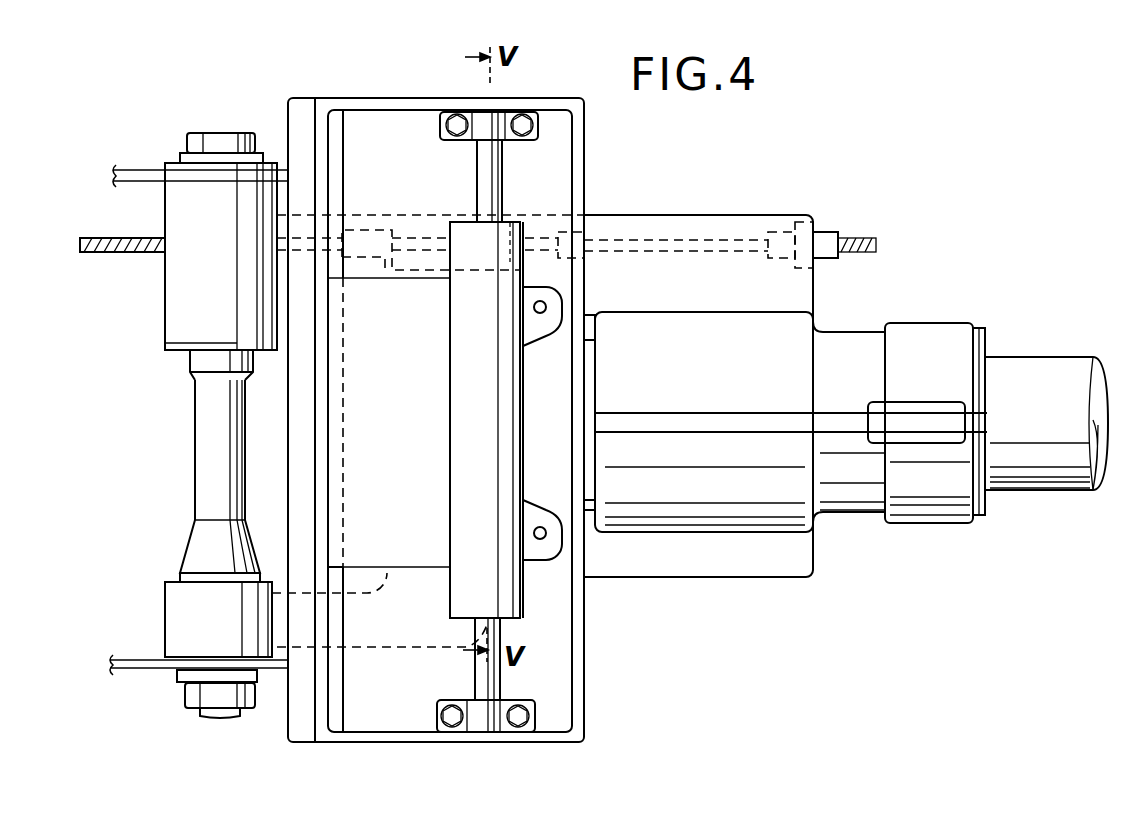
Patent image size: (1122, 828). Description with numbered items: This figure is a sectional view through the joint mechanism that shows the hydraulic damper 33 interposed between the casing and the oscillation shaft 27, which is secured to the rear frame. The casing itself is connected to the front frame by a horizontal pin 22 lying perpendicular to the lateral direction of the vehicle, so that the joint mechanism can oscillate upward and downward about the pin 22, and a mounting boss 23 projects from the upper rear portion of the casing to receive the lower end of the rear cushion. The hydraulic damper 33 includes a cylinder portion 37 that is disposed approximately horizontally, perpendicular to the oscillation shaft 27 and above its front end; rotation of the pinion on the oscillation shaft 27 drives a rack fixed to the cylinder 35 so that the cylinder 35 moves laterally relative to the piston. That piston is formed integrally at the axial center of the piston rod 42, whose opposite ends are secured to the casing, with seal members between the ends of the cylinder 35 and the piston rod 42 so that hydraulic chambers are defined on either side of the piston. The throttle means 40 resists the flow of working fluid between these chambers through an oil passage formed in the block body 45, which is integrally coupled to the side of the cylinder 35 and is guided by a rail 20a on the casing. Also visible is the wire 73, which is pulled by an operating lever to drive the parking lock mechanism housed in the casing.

The rail 20a is at (338, 663).
The horizontal pin 22 is at (200, 434).
The mounting boss 23 is at (920, 411).
The oscillation shaft 27 is at (1040, 363).
The hydraulic damper 33 is at (413, 264).
The cylinder 35 is at (494, 426).
The cylinder portion 37 is at (526, 568).
The throttle means 40 is at (326, 462).
The piston rod 42 is at (495, 182).
The block body 45 is at (398, 426).
The wire 73 is at (855, 246).